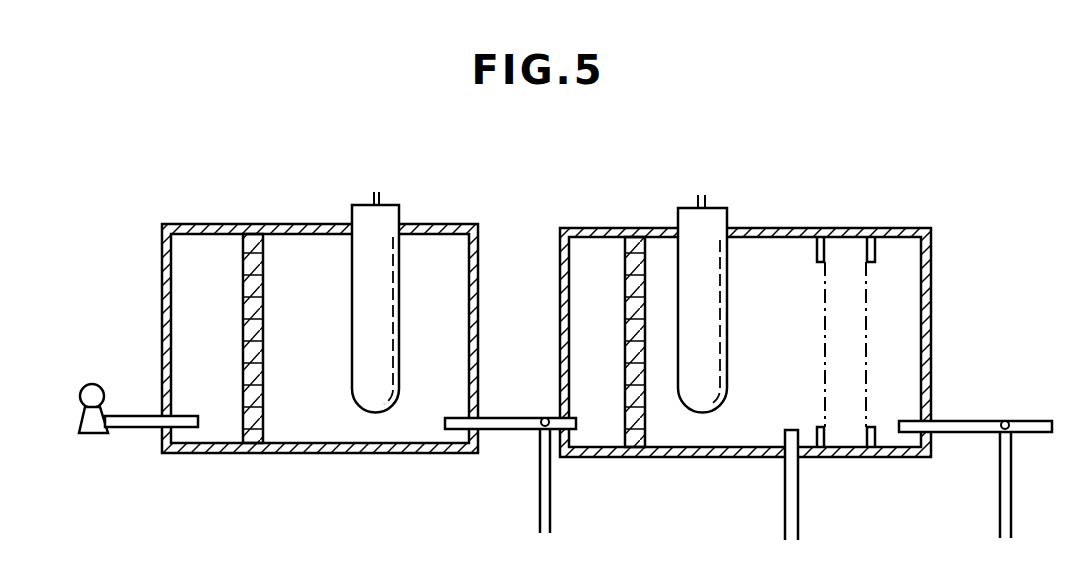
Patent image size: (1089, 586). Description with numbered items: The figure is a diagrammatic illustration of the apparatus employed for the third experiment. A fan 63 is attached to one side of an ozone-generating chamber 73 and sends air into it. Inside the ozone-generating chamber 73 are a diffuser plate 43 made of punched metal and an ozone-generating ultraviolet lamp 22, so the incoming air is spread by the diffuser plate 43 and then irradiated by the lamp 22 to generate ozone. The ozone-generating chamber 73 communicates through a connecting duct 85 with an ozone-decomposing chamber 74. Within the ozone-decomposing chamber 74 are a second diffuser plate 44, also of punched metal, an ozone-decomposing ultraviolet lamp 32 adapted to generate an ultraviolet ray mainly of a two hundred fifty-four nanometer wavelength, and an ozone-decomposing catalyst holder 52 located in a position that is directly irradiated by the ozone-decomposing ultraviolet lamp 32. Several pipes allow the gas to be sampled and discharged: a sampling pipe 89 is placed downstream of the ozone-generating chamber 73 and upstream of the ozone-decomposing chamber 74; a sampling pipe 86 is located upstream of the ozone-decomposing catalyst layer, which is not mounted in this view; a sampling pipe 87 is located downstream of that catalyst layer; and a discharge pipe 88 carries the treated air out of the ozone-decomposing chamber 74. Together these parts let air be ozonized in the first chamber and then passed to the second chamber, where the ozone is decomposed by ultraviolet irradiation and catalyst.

The ozone-generating ultraviolet lamp 22 is at (388, 232).
The ozone-decomposing ultraviolet lamp 32 is at (714, 228).
The diffuser plate 43 is at (251, 238).
The diffuser plate 44 is at (632, 240).
The ozone-decomposing catalyst holder 52 is at (838, 262).
The fan 63 is at (92, 383).
The ozone-generating chamber 73 is at (352, 455).
The ozone-decomposing chamber 74 is at (690, 458).
The connecting duct 85 is at (505, 432).
The sampling pipe 86 is at (799, 495).
The sampling pipe 87 is at (1012, 490).
The discharge pipe 88 is at (1028, 420).
The sampling pipe 89 is at (552, 517).